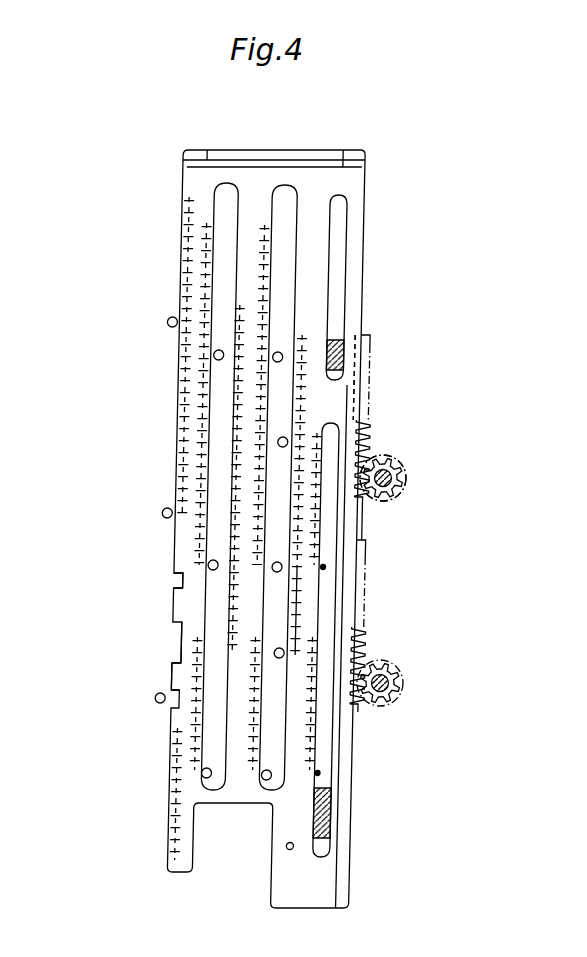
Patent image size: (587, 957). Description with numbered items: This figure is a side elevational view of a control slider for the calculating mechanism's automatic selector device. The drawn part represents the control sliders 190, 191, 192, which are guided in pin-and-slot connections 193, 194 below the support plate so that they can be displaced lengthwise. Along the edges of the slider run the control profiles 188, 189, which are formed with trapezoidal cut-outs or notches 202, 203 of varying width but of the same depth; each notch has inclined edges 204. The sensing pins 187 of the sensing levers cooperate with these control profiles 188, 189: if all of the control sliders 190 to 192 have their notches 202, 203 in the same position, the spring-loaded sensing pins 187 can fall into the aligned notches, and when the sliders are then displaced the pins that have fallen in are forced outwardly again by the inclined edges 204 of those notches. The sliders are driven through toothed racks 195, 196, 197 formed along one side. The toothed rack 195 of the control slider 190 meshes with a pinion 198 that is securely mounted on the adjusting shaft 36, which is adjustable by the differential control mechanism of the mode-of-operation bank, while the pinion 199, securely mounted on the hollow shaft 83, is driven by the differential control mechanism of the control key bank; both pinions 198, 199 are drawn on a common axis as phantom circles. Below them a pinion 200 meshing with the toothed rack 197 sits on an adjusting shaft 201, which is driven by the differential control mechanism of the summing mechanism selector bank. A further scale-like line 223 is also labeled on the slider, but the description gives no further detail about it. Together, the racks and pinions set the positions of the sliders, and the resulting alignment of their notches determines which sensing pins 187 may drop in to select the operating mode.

The control slider 190 is at (343, 165).
The control slider 191 is at (207, 157).
The control slider 192 is at (267, 155).
The pin-and-slot connection 193 is at (333, 508).
The pin-and-slot connection 194 is at (325, 822).
The toothed rack 195 is at (364, 385).
The toothed rack 196 is at (354, 377).
The toothed rack 197 is at (364, 623).
The pinion 198 is at (403, 498).
The pinion 199 is at (383, 478).
The adjusting shaft 36 is at (399, 468).
The hollow shaft 83 is at (393, 482).
The pinion 200 is at (401, 677).
The adjusting shaft 201 is at (390, 686).
The scale line 223 is at (293, 596).
The control profile 188 is at (290, 412).
The control profile 189 is at (287, 497).
The sensing pin 187 is at (276, 658).
The notch 203 is at (176, 583).
The notch 202 is at (182, 636).
The inclined edge 204 is at (170, 662).